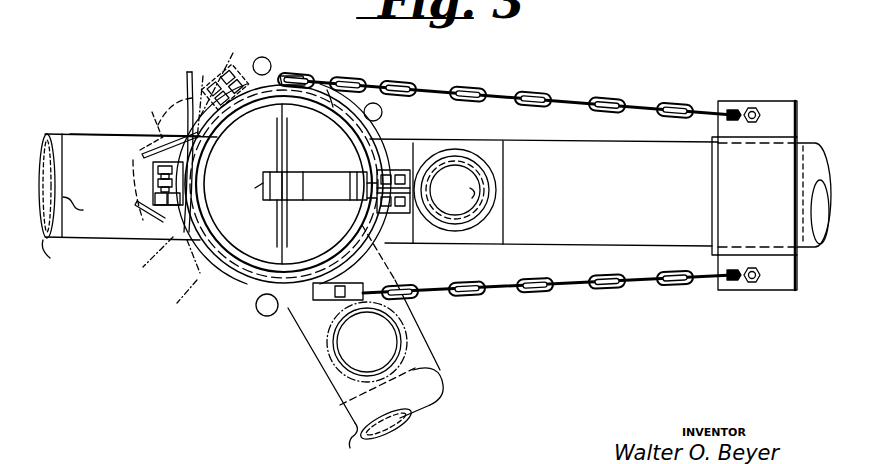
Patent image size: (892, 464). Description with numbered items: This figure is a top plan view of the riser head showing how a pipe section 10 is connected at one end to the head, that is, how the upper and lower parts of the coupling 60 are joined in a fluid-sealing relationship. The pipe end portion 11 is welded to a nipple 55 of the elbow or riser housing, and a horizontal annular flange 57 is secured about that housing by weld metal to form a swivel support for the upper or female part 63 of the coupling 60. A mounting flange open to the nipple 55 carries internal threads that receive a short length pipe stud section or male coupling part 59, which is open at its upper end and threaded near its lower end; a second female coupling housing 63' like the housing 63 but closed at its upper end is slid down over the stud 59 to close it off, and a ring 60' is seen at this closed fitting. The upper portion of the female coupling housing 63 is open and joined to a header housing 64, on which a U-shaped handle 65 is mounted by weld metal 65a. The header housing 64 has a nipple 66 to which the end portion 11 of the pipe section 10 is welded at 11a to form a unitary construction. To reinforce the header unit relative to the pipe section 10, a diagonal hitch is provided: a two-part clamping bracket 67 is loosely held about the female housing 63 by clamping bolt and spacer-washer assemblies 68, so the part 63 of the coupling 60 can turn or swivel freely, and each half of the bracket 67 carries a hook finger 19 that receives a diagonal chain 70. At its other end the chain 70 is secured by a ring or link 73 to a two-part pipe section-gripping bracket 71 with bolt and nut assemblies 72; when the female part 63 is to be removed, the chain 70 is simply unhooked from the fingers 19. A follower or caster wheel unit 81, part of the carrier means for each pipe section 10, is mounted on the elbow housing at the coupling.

The pipe section 10 is at (62, 134).
The pipe end portion 11 is at (603, 241).
The weld 11a is at (530, 222).
The hook finger 19 is at (266, 58).
The nipple 55 is at (477, 241).
The horizontal annular flange 57 is at (382, 250).
The pipe stud section 59 is at (500, 197).
The coupling 60 is at (261, 168).
The clamp ring 60' is at (318, 265).
The female coupling housing 63 is at (358, 73).
The female coupling housing 63' is at (168, 160).
The header housing 64 is at (295, 97).
The handle 65 is at (330, 200).
The weld metal 65a is at (236, 194).
The nipple 66 is at (97, 133).
The clamping bracket 67 is at (240, 289).
The clamping bolt and spacer-washer assemblies 68 is at (203, 72).
The diagonal chain 70 is at (579, 79).
The pipe section-gripping bracket 71 is at (780, 105).
The bolt and nut assemblies 72 is at (757, 108).
The ring 73 is at (735, 110).
The caster wheel unit 81 is at (192, 101).